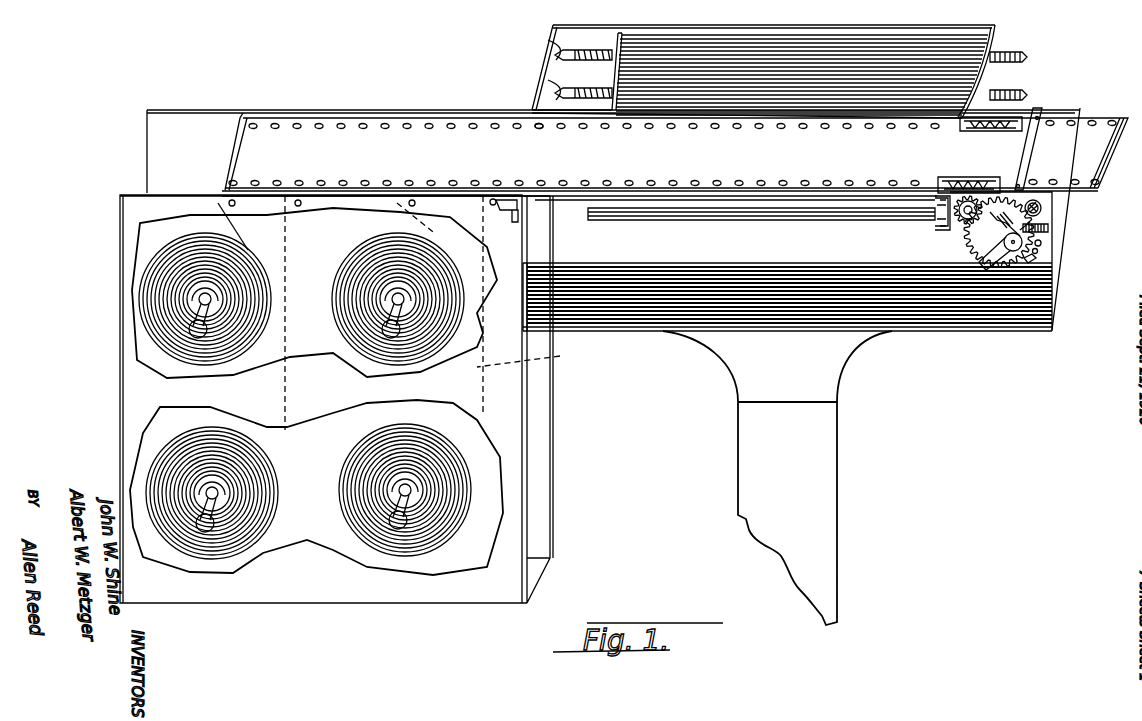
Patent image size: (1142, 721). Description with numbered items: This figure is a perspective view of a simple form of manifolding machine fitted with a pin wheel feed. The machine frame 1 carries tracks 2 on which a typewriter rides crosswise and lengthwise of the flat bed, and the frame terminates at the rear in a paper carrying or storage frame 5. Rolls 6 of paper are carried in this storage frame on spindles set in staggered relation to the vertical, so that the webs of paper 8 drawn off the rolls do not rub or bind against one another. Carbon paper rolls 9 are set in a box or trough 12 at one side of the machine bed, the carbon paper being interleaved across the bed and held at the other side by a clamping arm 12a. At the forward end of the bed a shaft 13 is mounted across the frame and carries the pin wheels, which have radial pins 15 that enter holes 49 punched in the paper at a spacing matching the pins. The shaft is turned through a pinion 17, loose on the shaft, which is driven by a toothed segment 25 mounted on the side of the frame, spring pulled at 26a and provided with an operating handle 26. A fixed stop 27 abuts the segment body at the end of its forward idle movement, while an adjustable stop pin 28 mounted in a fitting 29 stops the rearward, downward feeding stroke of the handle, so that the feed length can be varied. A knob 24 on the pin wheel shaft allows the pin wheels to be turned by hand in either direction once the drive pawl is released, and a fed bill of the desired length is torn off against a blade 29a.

The machine frame 1 is at (822, 380).
The tracks 2 is at (483, 100).
The paper carrying or storage frame 5 is at (453, 391).
The rolls of paper 6 is at (163, 353).
The webs of paper 8 is at (243, 148).
The carbon paper rolls 9 is at (868, 53).
The box or trough 12 is at (1002, 80).
The clamping arm 12a is at (653, 202).
The shaft 13 is at (955, 216).
The radial pins 15 is at (964, 178).
The pinion 17 is at (960, 222).
The knob 24 is at (940, 222).
The toothed segment 25 is at (983, 268).
The operating handle 26 is at (1041, 203).
The spring 26a is at (1045, 228).
The fixed stop 27 is at (1020, 224).
The adjustable stop pin 28 is at (1033, 253).
The fitting 29 is at (1029, 262).
The blade 29a is at (1025, 151).
The holes 49 is at (536, 129).